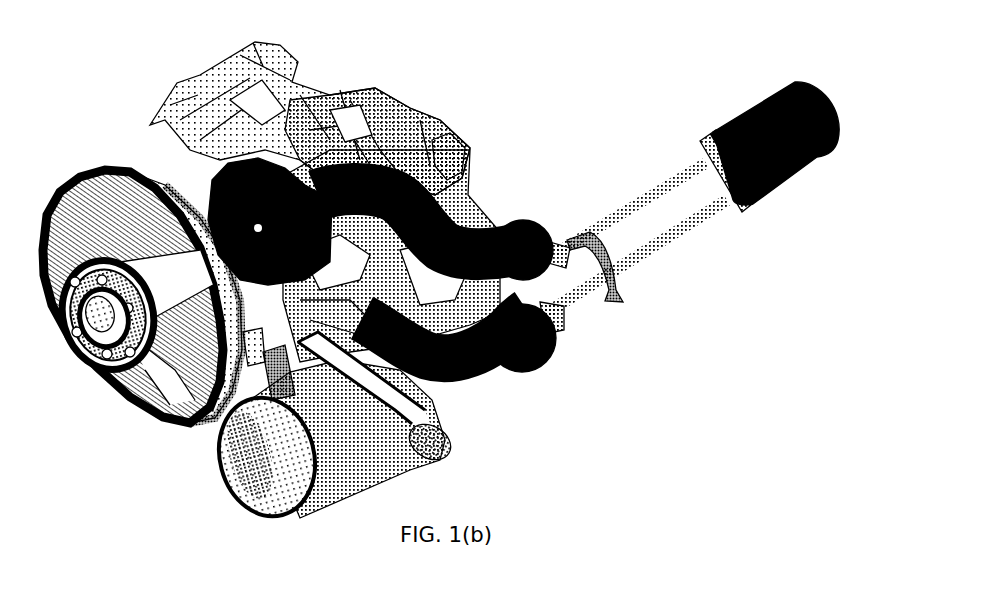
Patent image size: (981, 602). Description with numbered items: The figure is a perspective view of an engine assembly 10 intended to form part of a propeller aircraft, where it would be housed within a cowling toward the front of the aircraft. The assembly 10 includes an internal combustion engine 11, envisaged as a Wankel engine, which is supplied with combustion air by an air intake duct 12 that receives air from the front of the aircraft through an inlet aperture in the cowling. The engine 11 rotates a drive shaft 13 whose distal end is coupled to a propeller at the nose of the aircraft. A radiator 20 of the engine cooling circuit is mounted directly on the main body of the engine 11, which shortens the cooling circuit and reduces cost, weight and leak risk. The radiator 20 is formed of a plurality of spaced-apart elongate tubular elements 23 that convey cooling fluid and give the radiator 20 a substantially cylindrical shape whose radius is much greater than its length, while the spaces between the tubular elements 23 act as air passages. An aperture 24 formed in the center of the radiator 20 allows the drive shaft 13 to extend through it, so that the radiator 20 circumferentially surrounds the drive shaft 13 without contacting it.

The engine assembly 10 is at (492, 130).
The internal combustion engine 11 is at (350, 123).
The air intake duct 12 is at (240, 160).
The drive shaft 13 is at (115, 347).
The radiator 20 is at (142, 413).
The elongate tubular elements 23 is at (178, 393).
The aperture 24 is at (107, 253).